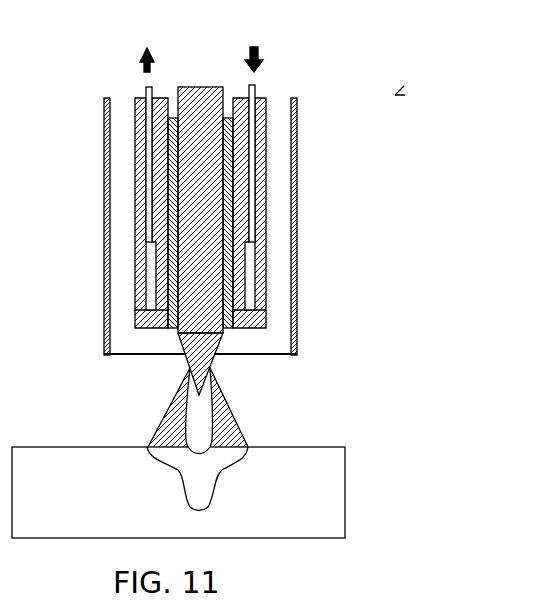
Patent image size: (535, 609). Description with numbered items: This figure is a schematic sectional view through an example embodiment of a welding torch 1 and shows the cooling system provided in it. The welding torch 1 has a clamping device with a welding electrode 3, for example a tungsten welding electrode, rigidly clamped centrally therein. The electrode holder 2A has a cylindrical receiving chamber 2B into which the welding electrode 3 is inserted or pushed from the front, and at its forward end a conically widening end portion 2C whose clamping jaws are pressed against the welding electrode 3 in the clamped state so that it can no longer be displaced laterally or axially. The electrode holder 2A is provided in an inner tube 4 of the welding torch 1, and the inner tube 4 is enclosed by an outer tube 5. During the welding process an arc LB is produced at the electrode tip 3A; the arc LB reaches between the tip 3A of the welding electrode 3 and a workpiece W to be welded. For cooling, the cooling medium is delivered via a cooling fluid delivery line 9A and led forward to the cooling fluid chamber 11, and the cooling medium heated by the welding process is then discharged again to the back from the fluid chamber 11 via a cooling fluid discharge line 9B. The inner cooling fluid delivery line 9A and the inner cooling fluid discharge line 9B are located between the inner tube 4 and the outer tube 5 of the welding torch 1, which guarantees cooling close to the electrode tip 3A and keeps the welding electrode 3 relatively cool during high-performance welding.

The welding torch 1 is at (398, 93).
The electrode holder 2A is at (248, 123).
The receiving chamber 2B is at (228, 212).
The end portion 2C is at (228, 330).
The welding electrode 3 is at (200, 87).
The electrode tip 3A is at (207, 382).
The inner tube 4 is at (157, 99).
The outer tube 5 is at (268, 106).
The cooling fluid delivery line 9A is at (257, 86).
The cooling fluid discharge line 9B is at (146, 90).
The cooling fluid chamber 11 is at (247, 275).
The arc LB is at (195, 428).
The workpiece W is at (178, 492).